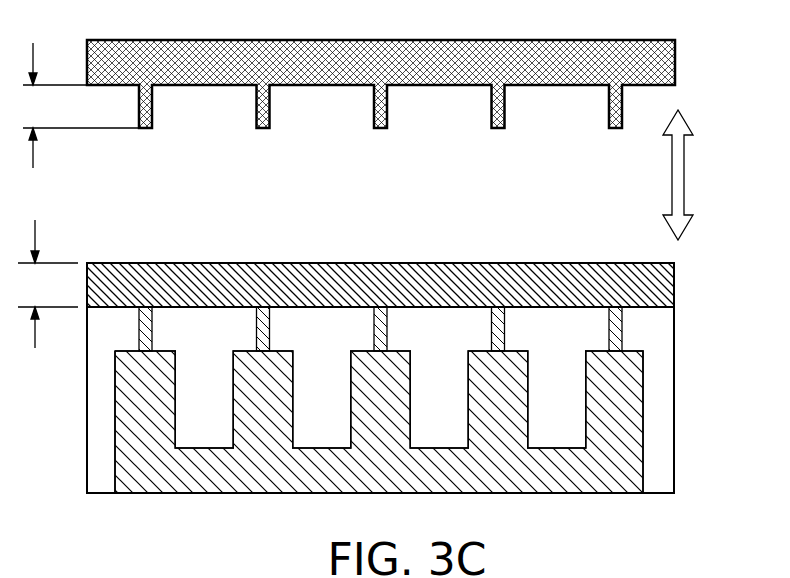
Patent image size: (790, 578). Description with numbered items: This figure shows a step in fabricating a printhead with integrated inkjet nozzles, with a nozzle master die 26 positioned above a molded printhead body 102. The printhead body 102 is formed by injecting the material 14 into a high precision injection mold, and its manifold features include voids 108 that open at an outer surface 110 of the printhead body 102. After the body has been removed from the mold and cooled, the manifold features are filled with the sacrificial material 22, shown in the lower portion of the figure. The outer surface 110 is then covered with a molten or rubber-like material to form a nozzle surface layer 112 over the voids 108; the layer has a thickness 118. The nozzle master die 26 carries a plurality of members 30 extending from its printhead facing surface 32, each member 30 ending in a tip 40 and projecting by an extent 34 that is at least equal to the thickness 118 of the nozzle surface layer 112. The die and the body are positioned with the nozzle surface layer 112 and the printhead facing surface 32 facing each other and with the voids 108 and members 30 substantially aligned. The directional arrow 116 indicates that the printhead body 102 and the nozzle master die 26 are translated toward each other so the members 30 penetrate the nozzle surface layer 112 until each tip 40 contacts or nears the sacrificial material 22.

The nozzle master die 26 is at (369, 72).
The members 30 is at (374, 117).
The printhead facing surface 32 is at (203, 85).
The extent of each member 34 is at (80, 118).
The tip of member 40 is at (262, 128).
The directional arrow 116 is at (685, 175).
The printhead body 102 is at (689, 379).
The nozzle surface layer 112 is at (366, 295).
The outer surface 110 is at (110, 308).
The voids 108 is at (152, 328).
The thickness of nozzle surface layer 118 is at (48, 297).
The material 14 is at (193, 403).
The sacrificial material 22 is at (369, 478).